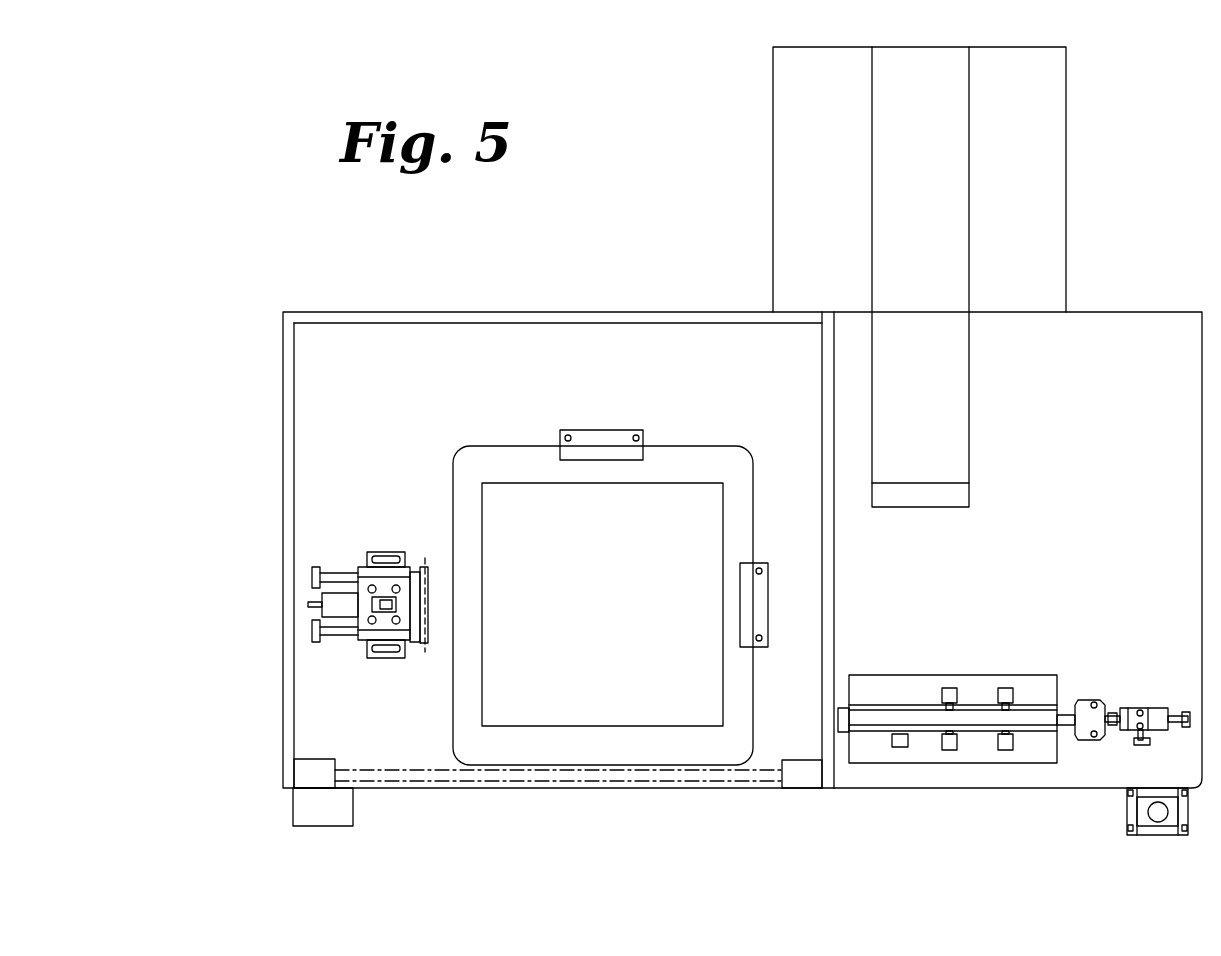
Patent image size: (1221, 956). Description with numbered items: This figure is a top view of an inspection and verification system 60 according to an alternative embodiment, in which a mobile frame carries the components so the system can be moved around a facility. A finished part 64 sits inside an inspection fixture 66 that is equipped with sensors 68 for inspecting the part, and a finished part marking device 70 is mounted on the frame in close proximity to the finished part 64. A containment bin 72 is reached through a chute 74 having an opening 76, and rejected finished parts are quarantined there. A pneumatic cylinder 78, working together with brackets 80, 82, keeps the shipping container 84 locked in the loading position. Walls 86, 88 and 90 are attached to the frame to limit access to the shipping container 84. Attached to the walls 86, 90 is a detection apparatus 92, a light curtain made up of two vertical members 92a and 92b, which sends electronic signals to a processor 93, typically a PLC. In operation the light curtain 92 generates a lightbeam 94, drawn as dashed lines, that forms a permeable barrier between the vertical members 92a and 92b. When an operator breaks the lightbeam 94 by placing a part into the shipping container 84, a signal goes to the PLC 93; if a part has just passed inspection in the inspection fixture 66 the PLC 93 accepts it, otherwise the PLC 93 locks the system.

The inspection and verification system 60 is at (193, 724).
The finished part 64 is at (1068, 700).
The inspection fixture 66 is at (1050, 685).
The sensors 68 is at (1005, 688).
The finished part marking device 70 is at (1168, 700).
The containment bin 72 is at (1066, 170).
The chute 74 is at (931, 163).
The opening 76 is at (970, 495).
The pneumatic cylinder 78 is at (382, 536).
The bracket 80 is at (610, 430).
The bracket 82 is at (770, 592).
The shipping container 84 is at (510, 446).
The wall 86 is at (283, 432).
The wall 88 is at (395, 311).
The wall 90 is at (835, 620).
The detection apparatus 92 is at (517, 809).
The vertical member 92a is at (283, 777).
The vertical member 92b is at (805, 788).
The processor 93 is at (340, 826).
The lightbeam 94 is at (623, 776).